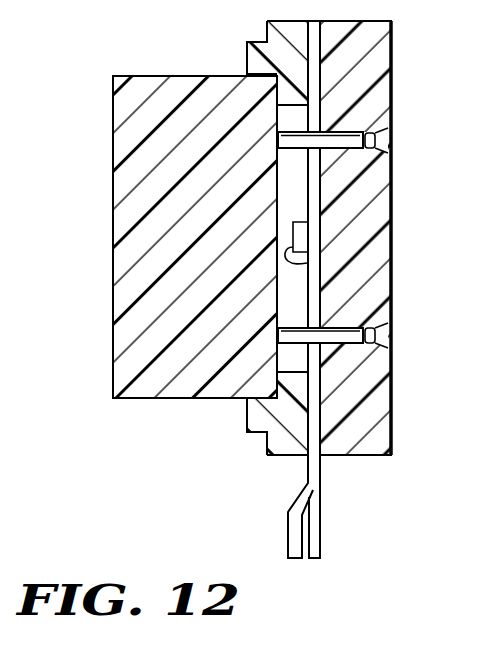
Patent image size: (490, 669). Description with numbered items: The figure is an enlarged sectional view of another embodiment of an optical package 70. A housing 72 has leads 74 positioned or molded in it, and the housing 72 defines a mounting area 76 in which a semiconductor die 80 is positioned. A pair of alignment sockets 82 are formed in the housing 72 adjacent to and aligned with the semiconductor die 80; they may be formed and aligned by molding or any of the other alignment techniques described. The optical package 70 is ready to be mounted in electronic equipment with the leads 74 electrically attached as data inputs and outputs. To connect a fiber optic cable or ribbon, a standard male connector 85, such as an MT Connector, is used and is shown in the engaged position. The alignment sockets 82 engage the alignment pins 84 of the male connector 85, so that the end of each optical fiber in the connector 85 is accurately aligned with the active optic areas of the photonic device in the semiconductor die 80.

The optical package 70 is at (256, 288).
The housing 72 is at (392, 50).
The leads 74 is at (322, 528).
The mounting area 76 is at (247, 75).
The semiconductor die 80 is at (302, 236).
The alignment sockets 82 is at (388, 146).
The alignment pins 84 is at (364, 131).
The male connector 85 is at (121, 300).